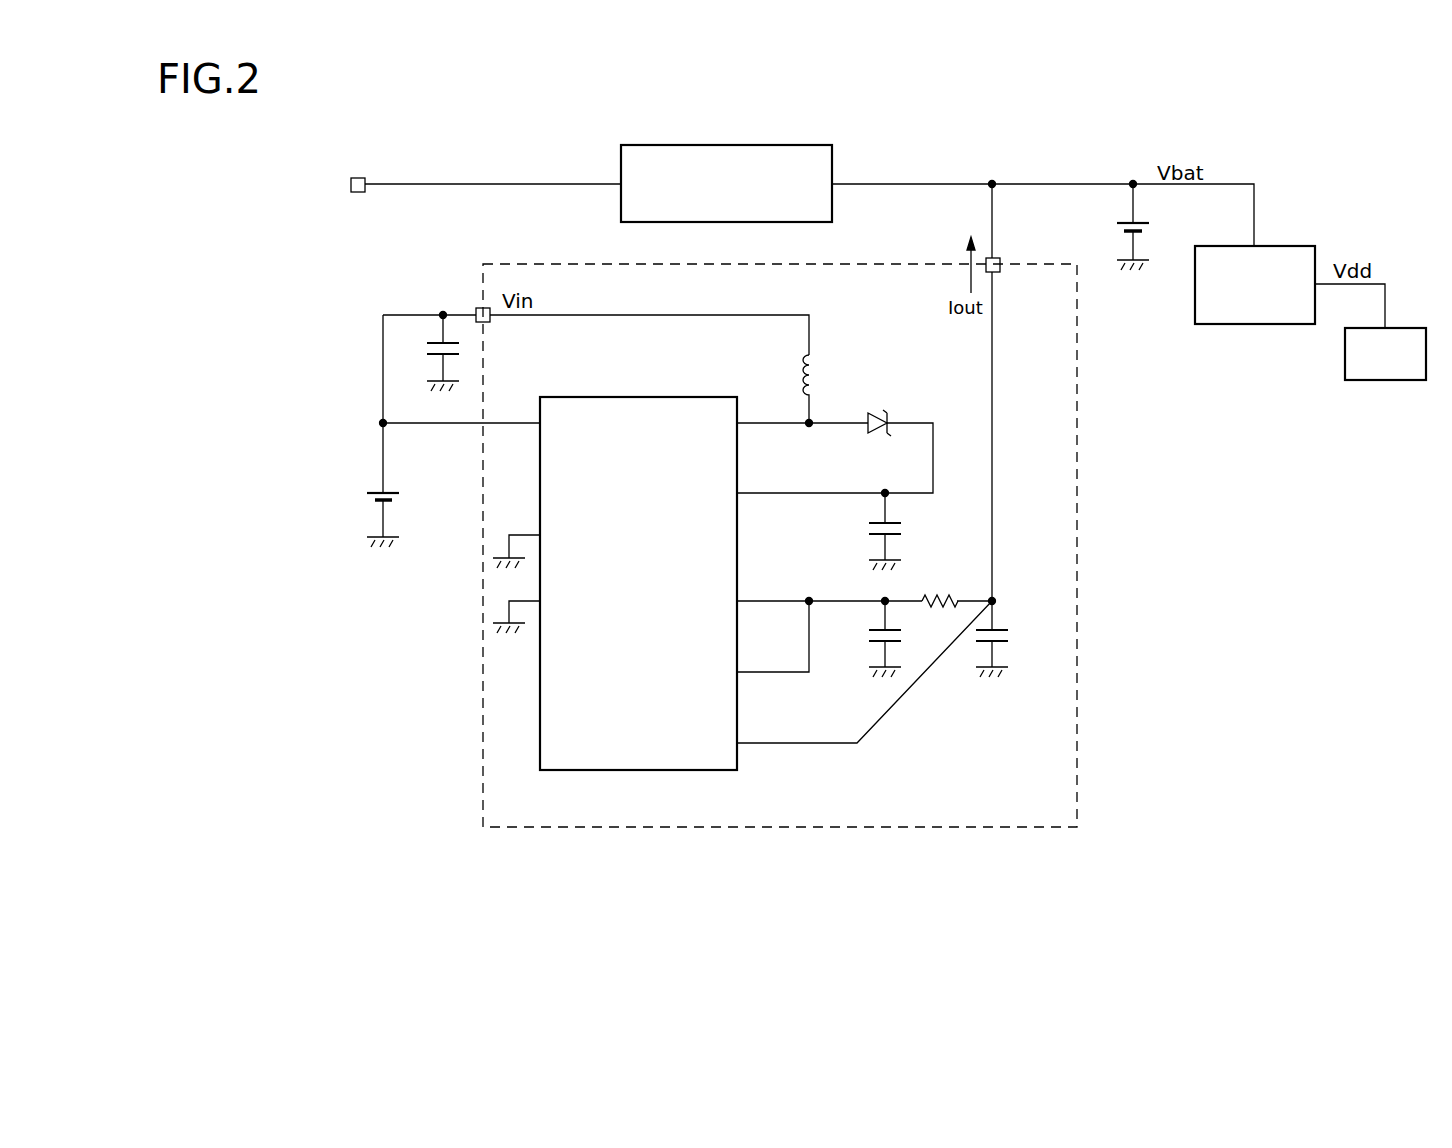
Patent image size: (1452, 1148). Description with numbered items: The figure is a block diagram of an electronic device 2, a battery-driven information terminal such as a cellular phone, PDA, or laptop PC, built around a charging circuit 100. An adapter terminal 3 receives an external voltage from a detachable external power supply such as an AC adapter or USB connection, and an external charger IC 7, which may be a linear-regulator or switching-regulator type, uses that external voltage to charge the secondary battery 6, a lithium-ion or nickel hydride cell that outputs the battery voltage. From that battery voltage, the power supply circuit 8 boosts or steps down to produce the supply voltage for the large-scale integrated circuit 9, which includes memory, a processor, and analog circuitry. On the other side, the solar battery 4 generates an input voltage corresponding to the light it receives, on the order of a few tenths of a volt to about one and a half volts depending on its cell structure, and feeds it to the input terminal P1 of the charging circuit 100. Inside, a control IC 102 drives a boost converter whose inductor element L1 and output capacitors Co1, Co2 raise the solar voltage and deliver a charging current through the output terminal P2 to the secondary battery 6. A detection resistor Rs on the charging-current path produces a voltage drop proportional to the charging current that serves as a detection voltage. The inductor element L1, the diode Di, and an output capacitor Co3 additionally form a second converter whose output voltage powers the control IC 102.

The electronic device 2 is at (874, 899).
The adapter terminal 3 is at (358, 192).
The solar battery 4 is at (368, 497).
The secondary battery 6 is at (1152, 230).
The external charger IC 7 is at (750, 145).
The power supply circuit 8 is at (1245, 324).
The LSI 9 is at (1393, 380).
The charging circuit 100 is at (1078, 735).
The control IC 102 is at (645, 397).
The input terminal P1 is at (478, 308).
The output terminal P2 is at (1001, 258).
The inductor element L1 is at (820, 372).
The diode Di is at (885, 411).
The output capacitor Co1 is at (871, 632).
The output capacitor Co2 is at (1012, 633).
The output capacitor Co3 is at (871, 530).
The detection resistor Rs is at (938, 594).